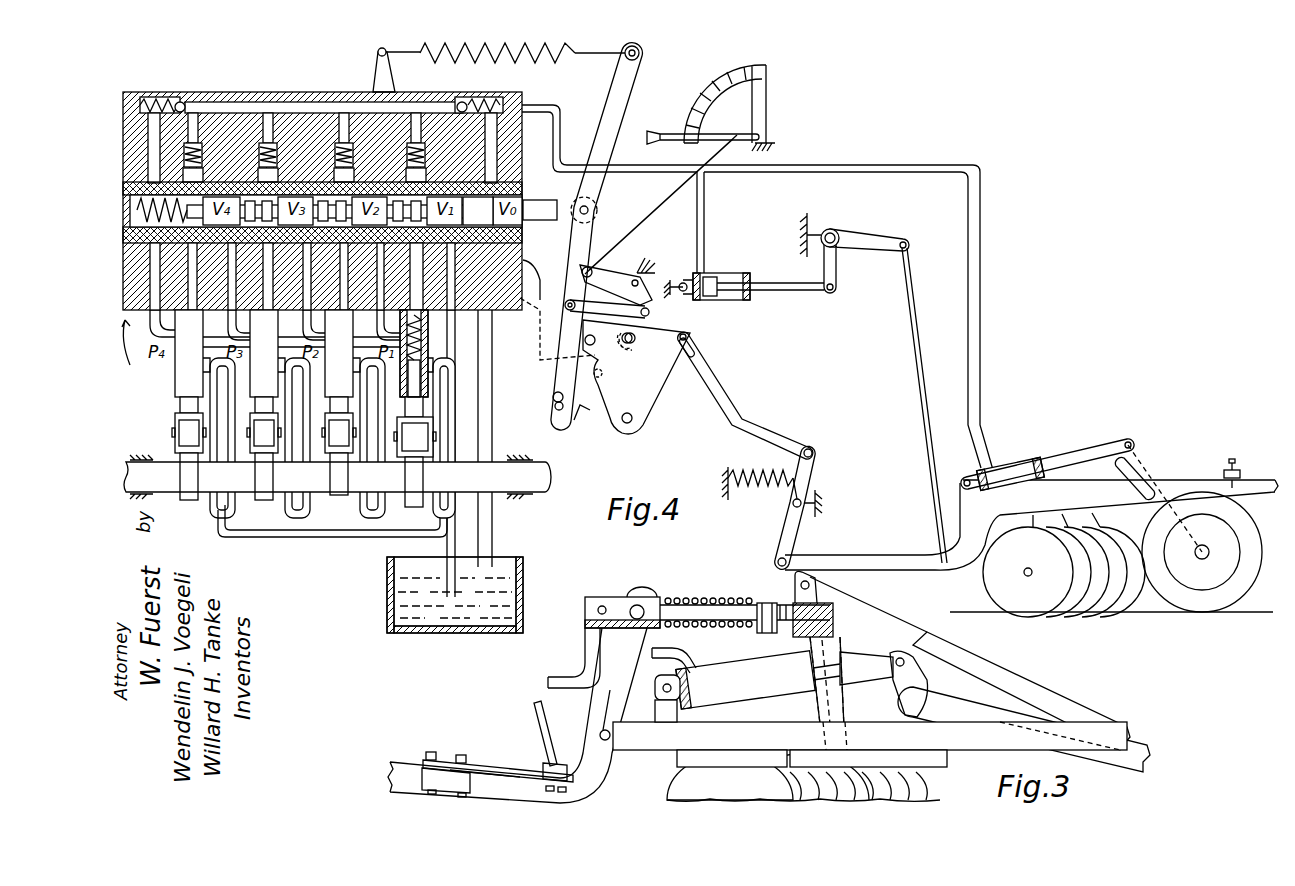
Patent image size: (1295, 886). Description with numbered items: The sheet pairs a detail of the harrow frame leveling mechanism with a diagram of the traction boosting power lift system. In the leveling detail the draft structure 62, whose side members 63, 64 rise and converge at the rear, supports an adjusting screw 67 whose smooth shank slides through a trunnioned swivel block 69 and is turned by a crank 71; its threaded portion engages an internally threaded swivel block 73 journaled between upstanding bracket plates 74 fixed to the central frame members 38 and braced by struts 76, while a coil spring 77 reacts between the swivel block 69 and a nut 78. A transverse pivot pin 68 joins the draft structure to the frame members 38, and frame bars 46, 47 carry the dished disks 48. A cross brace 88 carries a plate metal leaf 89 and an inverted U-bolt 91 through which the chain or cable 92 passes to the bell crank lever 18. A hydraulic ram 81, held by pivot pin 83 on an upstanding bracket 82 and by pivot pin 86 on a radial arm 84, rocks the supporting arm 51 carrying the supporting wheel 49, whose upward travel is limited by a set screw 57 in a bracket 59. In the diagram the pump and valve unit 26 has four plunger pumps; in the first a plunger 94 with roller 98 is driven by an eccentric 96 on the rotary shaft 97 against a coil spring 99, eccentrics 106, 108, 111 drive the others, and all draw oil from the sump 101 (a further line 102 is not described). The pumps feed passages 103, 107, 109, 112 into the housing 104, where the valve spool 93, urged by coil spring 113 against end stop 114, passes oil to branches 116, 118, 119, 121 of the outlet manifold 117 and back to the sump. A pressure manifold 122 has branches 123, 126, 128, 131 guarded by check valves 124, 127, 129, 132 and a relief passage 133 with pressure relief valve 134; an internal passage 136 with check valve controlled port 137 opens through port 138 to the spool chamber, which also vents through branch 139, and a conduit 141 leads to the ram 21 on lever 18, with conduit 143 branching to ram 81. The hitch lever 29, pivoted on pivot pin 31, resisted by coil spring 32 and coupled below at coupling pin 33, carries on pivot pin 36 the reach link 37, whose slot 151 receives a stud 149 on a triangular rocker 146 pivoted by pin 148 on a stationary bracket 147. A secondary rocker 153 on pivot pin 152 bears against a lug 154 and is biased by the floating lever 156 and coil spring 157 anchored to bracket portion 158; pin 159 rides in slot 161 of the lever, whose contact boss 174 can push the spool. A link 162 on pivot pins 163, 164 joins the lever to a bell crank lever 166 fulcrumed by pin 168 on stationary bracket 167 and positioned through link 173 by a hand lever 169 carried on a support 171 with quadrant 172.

In FIG. 4, the bell crank lever 18 is at (862, 238).
In FIG. 4, the actuating ram 21 is at (720, 274).
In FIG. 4, the pump and valve unit 26 is at (165, 405).
In FIG. 4, the hitch lever 29 is at (776, 540).
In FIG. 4, the pivot pin 31 is at (792, 504).
In FIG. 4, the coil spring 32 is at (740, 490).
In FIG. 4, the coupling pin 33 is at (777, 562).
In FIG. 4, the pivot pin 36 is at (812, 450).
In FIG. 4, the reach link 37 is at (740, 418).
In FIG. 3, the central frame members 38 is at (792, 722).
In FIG. 3, the frame bar 46 is at (672, 792).
In FIG. 3, the frame bar 47 is at (947, 758).
In FIG. 4, the dished disks 48 is at (1025, 615).
In FIG. 3, the dished disks 48 is at (930, 792).
In FIG. 4, the supporting wheel 49 is at (1240, 588).
In FIG. 4, the supporting arm 51 is at (1146, 482).
In FIG. 3, the supporting arm 51 is at (1138, 756).
In FIG. 4, the set screw 57 is at (1233, 458).
In FIG. 4, the bracket 59 is at (1222, 472).
In FIG. 4, the draft structure 62 is at (892, 555).
In FIG. 3, the draft structure 62 is at (596, 700).
In FIG. 3, the side member 63 is at (610, 760).
In FIG. 3, the side member 64 is at (590, 800).
In FIG. 3, the adjusting screw 67 is at (722, 603).
In FIG. 3, the pivot pin 68 is at (600, 735).
In FIG. 3, the swivel block 69 is at (640, 596).
In FIG. 3, the crank 71 is at (585, 652).
In FIG. 3, the swivel block 73 is at (835, 600).
In FIG. 3, the bracket plates 74 is at (838, 716).
In FIG. 3, the struts 76 is at (930, 636).
In FIG. 3, the coil spring 77 is at (690, 600).
In FIG. 3, the nut 78 is at (766, 602).
In FIG. 4, the hydraulic ram 81 is at (1008, 462).
In FIG. 3, the hydraulic ram 81 is at (735, 702).
In FIG. 3, the upstanding bracket 82 is at (667, 722).
In FIG. 3, the pivot pin 83 is at (672, 689).
In FIG. 4, the radial arm 84 is at (1134, 452).
In FIG. 3, the radial arm 84 is at (892, 680).
In FIG. 3, the pivot pin 86 is at (893, 660).
In FIG. 3, the cross brace 88 is at (450, 759).
In FIG. 3, the plate metal leaf 89 is at (494, 776).
In FIG. 3, the U-bolt 91 is at (545, 765).
In FIG. 4, the chain or cable 92 is at (920, 378).
In FIG. 3, the chain or cable 92 is at (537, 707).
In FIG. 4, the valve spool 93 is at (540, 221).
In FIG. 4, the plunger 94 is at (406, 405).
In FIG. 4, the eccentric 96 is at (424, 480).
In FIG. 4, the rotary shaft 97 is at (548, 478).
In FIG. 4, the roller 98 is at (405, 460).
In FIG. 4, the coil spring 99 is at (407, 372).
In FIG. 4, the sump 101 is at (387, 602).
In FIG. 4, the pipe 102 is at (316, 537).
In FIG. 4, the passage 103 is at (424, 276).
In FIG. 4, the valve housing 104 is at (523, 276).
In FIG. 4, the eccentric 106 is at (331, 474).
In FIG. 4, the passage 107 is at (353, 276).
In FIG. 4, the eccentric 108 is at (256, 474).
In FIG. 4, the passage 109 is at (278, 276).
In FIG. 4, the eccentric 111 is at (178, 474).
In FIG. 4, the passage 112 is at (203, 276).
In FIG. 4, the coil spring 113 is at (322, 201).
In FIG. 4, the end stop 114 is at (522, 188).
In FIG. 4, the branch 116 is at (388, 291).
In FIG. 4, the outlet manifold 117 is at (478, 345).
In FIG. 4, the branch 118 is at (316, 291).
In FIG. 4, the branch 119 is at (242, 291).
In FIG. 4, the branch 121 is at (166, 290).
In FIG. 4, the pressure manifold 122 is at (318, 102).
In FIG. 4, the first branch 123 is at (416, 134).
In FIG. 4, the check valve 124 is at (425, 156).
In FIG. 4, the second branch 126 is at (344, 134).
In FIG. 4, the check valve 127 is at (353, 156).
In FIG. 4, the third branch 128 is at (268, 134).
In FIG. 4, the check valve 129 is at (277, 156).
In FIG. 4, the fourth branch 131 is at (192, 132).
In FIG. 4, the check valve 132 is at (202, 156).
In FIG. 4, the relief passage 133 is at (169, 148).
In FIG. 4, the pressure relief valve 134 is at (178, 100).
In FIG. 4, the internal passage 136 is at (497, 150).
In FIG. 4, the check valve controlled port 137 is at (458, 103).
In FIG. 4, the port 138 is at (480, 211).
In FIG. 4, the branch 139 is at (455, 276).
In FIG. 4, the conduit 141 is at (562, 128).
In FIG. 4, the conduit 143 is at (980, 343).
In FIG. 3, the conduit 143 is at (690, 664).
In FIG. 4, the triangular rocker 146 is at (645, 413).
In FIG. 4, the stationary bracket 147 is at (530, 360).
In FIG. 4, the pivot pin 148 is at (632, 343).
In FIG. 4, the stud 149 is at (690, 343).
In FIG. 4, the slot 151 is at (694, 355).
In FIG. 4, the pivot pin 152 is at (585, 341).
In FIG. 4, the secondary rocker 153 is at (582, 415).
In FIG. 4, the lug 154 is at (603, 374).
In FIG. 4, the floating lever 156 is at (632, 108).
In FIG. 4, the coil spring 157 is at (500, 47).
In FIG. 4, the bracket portion 158 is at (374, 62).
In FIG. 4, the pin 159 is at (552, 399).
In FIG. 4, the slot 161 is at (555, 409).
In FIG. 4, the link 162 is at (640, 334).
In FIG. 4, the pivot pin 163 is at (565, 305).
In FIG. 4, the pivot pin 164 is at (650, 313).
In FIG. 4, the bell crank lever 166 is at (642, 262).
In FIG. 4, the stationary bracket 167 is at (672, 278).
In FIG. 4, the pivot pin 168 is at (620, 290).
In FIG. 4, the hand lever 169 is at (655, 141).
In FIG. 4, the support 171 is at (768, 141).
In FIG. 4, the quadrant 172 is at (710, 80).
In FIG. 4, the link 173 is at (666, 202).
In FIG. 4, the contact boss 174 is at (598, 212).